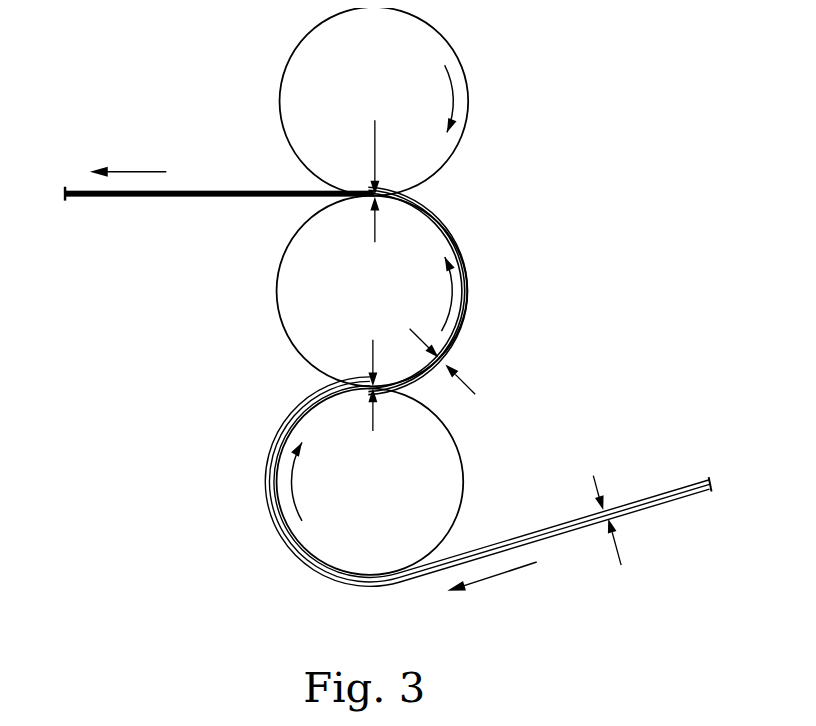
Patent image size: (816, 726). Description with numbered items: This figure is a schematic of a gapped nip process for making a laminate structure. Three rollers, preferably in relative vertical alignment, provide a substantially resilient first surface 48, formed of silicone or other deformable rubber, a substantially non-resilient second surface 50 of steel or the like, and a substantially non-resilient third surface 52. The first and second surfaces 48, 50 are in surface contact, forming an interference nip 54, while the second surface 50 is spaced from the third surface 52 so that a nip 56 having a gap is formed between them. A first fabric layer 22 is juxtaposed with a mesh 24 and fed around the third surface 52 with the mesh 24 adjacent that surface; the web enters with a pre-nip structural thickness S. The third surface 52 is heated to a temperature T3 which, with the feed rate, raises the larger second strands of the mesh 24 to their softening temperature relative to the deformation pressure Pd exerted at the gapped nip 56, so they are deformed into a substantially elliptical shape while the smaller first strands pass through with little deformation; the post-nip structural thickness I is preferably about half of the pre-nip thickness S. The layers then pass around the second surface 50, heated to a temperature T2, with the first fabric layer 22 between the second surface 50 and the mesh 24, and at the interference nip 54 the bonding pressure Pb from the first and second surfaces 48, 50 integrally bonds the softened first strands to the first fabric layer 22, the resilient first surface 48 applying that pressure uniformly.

The first surface 48 is at (414, 27).
The second surface 50 is at (300, 272).
The third surface 52 is at (452, 502).
The interference nip 54 is at (318, 184).
The gapped nip 56 is at (322, 382).
The first fabric layer 22 is at (678, 498).
The mesh 24 is at (685, 480).
The pre-nip structural thickness S is at (622, 552).
The post-nip structural thickness I is at (467, 383).
The bonding pressure Pb is at (377, 143).
The deformation pressure Pd is at (374, 430).
The temperature of second surface T2 is at (381, 300).
The temperature of third surface T3 is at (375, 490).